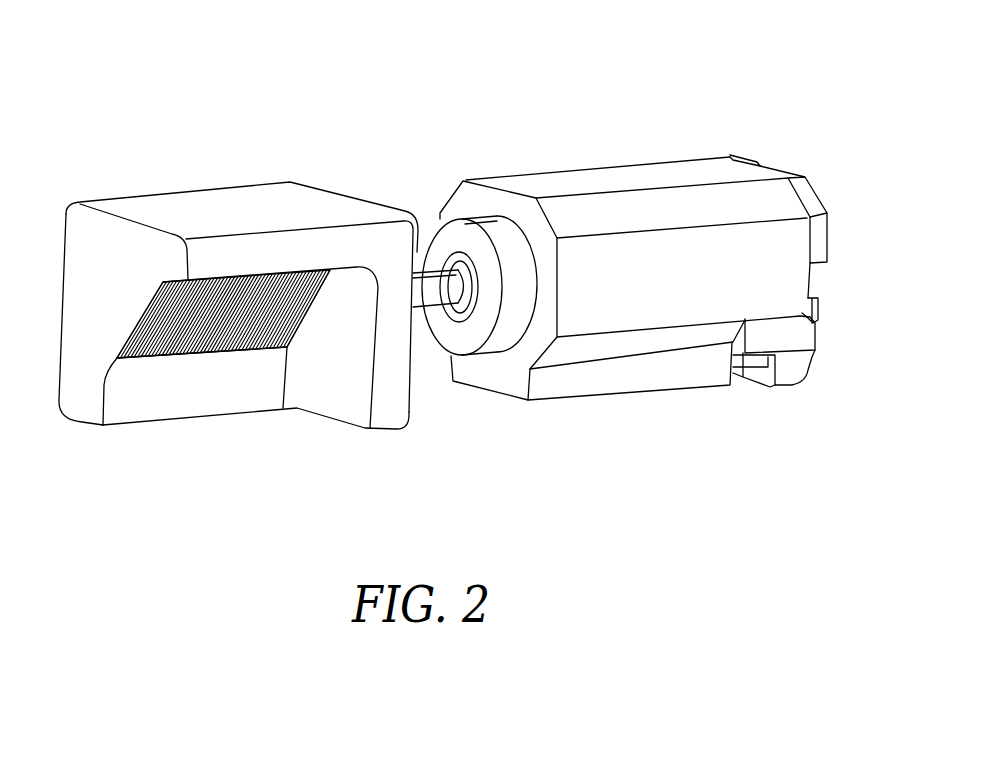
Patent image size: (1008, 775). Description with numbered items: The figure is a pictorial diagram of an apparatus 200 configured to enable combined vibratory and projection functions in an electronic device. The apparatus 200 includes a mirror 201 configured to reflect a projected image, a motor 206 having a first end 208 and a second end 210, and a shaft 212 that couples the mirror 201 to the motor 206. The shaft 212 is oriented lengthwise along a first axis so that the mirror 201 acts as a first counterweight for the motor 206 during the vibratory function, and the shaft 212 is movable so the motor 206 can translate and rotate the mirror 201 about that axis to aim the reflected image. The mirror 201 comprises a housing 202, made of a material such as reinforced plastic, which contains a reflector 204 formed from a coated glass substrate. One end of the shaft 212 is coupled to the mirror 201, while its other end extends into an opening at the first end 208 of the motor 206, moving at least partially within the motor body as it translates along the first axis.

The apparatus 200 is at (744, 53).
The mirror 201 is at (187, 190).
The housing 202 is at (87, 423).
The reflector 204 is at (183, 338).
The motor 206 is at (617, 178).
The first end 208 is at (493, 242).
The second end 210 is at (822, 198).
The shaft 212 is at (427, 297).